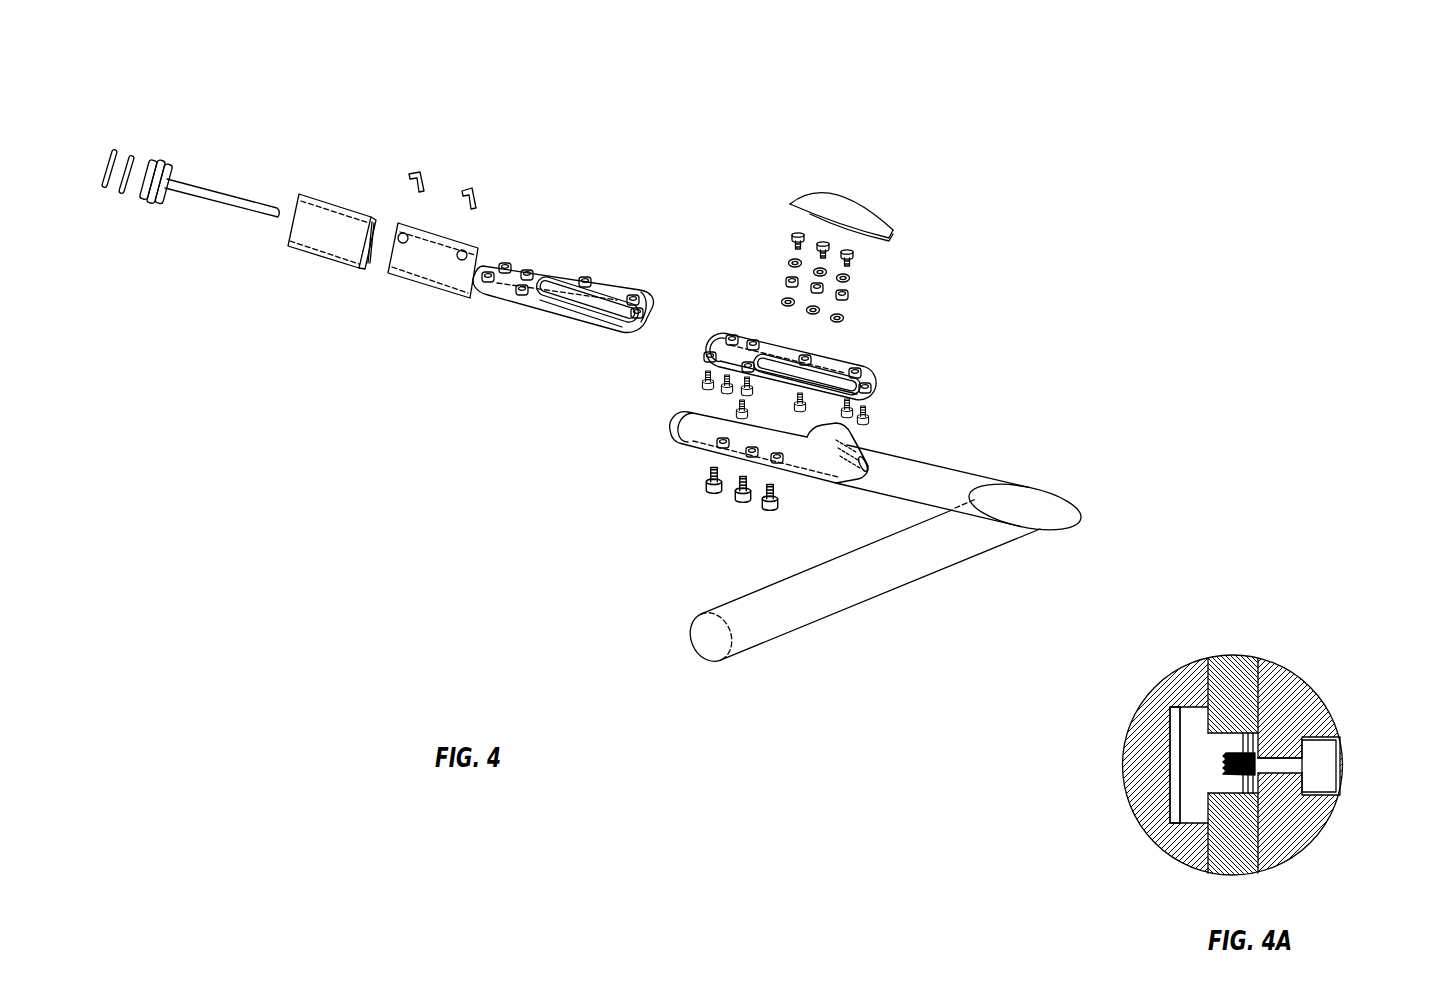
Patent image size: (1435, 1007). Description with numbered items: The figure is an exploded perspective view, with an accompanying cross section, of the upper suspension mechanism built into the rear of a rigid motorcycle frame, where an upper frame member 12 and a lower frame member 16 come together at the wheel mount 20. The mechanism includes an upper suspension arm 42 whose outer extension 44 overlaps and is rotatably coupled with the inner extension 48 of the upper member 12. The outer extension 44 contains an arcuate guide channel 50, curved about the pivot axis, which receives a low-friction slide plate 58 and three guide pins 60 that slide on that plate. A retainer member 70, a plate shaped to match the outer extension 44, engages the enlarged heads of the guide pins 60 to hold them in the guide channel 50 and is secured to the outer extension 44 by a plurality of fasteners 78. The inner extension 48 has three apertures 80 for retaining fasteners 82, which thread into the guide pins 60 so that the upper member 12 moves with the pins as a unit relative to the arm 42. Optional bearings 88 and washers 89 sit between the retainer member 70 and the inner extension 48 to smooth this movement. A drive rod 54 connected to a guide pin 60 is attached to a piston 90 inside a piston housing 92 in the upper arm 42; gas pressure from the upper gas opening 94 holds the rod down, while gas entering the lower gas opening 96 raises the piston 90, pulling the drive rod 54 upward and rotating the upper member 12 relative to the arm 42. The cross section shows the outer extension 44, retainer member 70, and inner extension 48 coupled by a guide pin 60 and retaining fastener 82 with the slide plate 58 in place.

In FIG. 4, the upper frame member 12 is at (957, 460).
In FIG. 4, the lower frame member 16 is at (913, 583).
In FIG. 4, the wheel mount 20 is at (1080, 478).
In FIG. 4, the upper suspension arm 42 is at (457, 297).
In FIG. 4, the outer extension 44 is at (578, 317).
In FIG. 4A, the outer extension 44 is at (1167, 835).
In FIG. 4, the inner extension 48 is at (740, 448).
In FIG. 4A, the inner extension 48 is at (1302, 830).
In FIG. 4, the guide channel 50 is at (577, 310).
In FIG. 4, the drive rod 54 is at (232, 190).
In FIG. 4, the slide plate 58 is at (877, 205).
In FIG. 4A, the slide plate 58 is at (1173, 720).
In FIG. 4, the guide pins 60 is at (864, 254).
In FIG. 4A, the guide pins 60 is at (1197, 712).
In FIG. 4, the retainer member 70 is at (877, 373).
In FIG. 4A, the retainer member 70 is at (1237, 667).
In FIG. 4, the fasteners 78 is at (867, 410).
In FIG. 4, the apertures 80 is at (715, 447).
In FIG. 4, the retaining fasteners 82 is at (785, 492).
In FIG. 4A, the retaining fasteners 82 is at (1327, 765).
In FIG. 4, the bearings 88 is at (777, 279).
In FIG. 4, the washers 89 is at (861, 279).
In FIG. 4, the piston 90 is at (163, 160).
In FIG. 4, the piston housing 92 is at (424, 265).
In FIG. 4, the upper gas opening 94 is at (410, 173).
In FIG. 4, the lower gas opening 96 is at (467, 193).